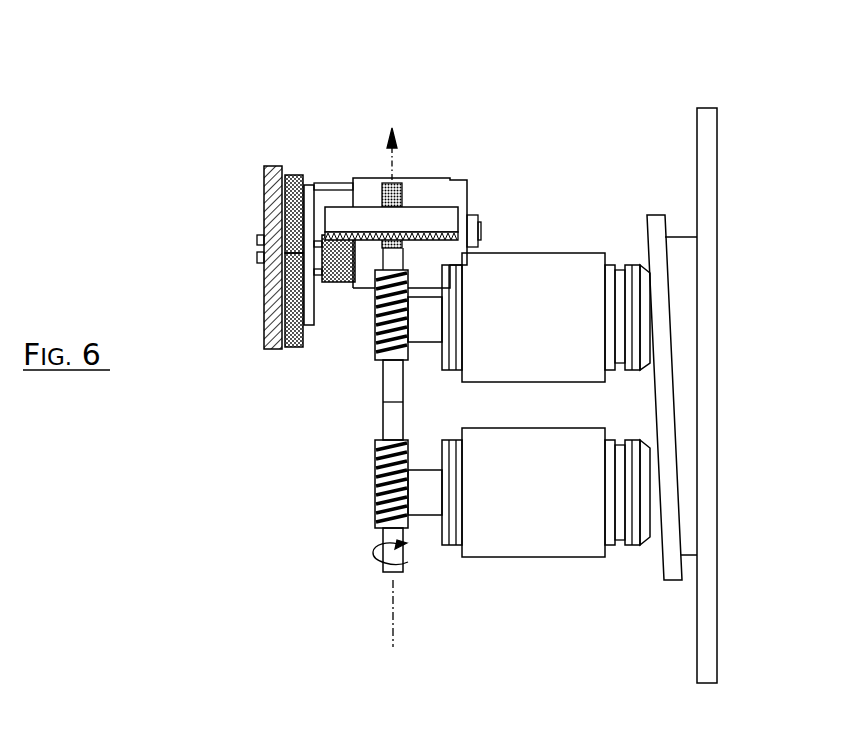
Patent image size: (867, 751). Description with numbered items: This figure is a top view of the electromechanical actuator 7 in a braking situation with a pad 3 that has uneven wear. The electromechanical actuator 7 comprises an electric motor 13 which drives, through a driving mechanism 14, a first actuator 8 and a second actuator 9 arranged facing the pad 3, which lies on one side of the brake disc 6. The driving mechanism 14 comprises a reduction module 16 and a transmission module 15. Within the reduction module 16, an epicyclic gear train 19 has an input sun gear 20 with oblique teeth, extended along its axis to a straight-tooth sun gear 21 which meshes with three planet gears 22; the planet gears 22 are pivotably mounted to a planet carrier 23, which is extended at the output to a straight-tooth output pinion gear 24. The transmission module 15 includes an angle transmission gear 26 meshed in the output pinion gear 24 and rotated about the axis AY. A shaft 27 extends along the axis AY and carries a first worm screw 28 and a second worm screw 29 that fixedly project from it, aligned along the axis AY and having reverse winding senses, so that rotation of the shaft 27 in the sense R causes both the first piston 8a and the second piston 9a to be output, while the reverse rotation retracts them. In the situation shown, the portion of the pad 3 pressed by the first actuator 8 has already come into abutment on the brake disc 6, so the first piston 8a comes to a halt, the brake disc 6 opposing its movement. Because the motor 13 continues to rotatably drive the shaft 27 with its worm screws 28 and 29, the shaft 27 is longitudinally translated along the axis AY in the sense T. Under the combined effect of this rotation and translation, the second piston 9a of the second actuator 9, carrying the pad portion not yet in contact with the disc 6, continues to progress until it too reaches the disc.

The pad 3 is at (655, 184).
The brake disc 6 is at (708, 183).
The electromechanical actuator 7 is at (597, 70).
The first actuator 8 is at (531, 221).
The first piston 8a is at (580, 258).
The second actuator 9 is at (528, 592).
The second piston 9a is at (583, 543).
The electric motor 13 is at (430, 190).
The driving mechanism 14 is at (138, 430).
The transmission module 15 is at (276, 464).
The reduction module 16 is at (229, 392).
The epicyclic gear train 19 is at (241, 210).
The input sun gear 20 is at (283, 200).
The straight-tooth sun gear 21 is at (293, 257).
The planet gears 22 is at (296, 175).
The planet carrier 23 is at (310, 193).
The output pinion gear 24 is at (338, 260).
The angle transmission gear 26 is at (430, 218).
The shaft 27 is at (385, 416).
The first worm screw 28 is at (385, 330).
The second worm screw 29 is at (390, 498).
The translation sense T is at (386, 141).
The rotation sense R is at (377, 557).
The axis AY is at (390, 614).